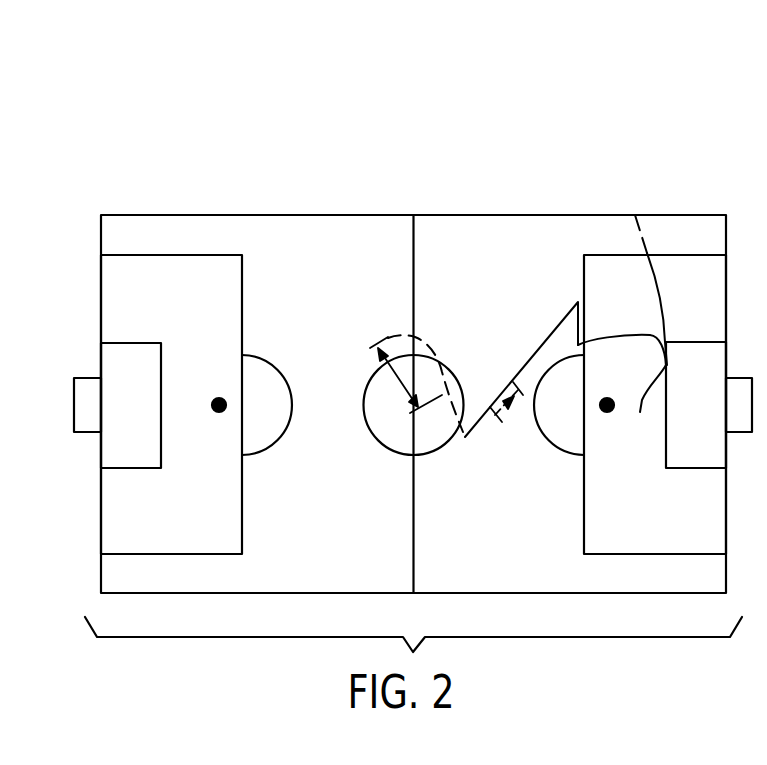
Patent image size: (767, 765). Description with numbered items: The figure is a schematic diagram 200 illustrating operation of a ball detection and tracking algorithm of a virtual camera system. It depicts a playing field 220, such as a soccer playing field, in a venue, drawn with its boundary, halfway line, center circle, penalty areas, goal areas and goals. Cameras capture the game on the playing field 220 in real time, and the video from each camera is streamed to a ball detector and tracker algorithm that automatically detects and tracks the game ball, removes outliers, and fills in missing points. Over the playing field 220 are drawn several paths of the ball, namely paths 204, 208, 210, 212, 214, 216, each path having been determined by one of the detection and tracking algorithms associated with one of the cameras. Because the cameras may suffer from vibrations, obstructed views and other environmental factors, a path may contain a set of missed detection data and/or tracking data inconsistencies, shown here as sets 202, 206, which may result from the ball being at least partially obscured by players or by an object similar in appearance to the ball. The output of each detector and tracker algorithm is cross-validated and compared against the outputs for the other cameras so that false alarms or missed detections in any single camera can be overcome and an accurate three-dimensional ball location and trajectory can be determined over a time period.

The schematic diagram 200 is at (560, 70).
The set of missed detection data and/or tracking data inconsistencies 202 is at (392, 381).
The path 204 is at (461, 433).
The set of missed detection data and/or tracking data inconsistencies 206 is at (508, 412).
The path 208 is at (528, 361).
The path 210 is at (577, 334).
The path 212 is at (605, 340).
The path 214 is at (640, 412).
The path 216 is at (667, 322).
The playing field 220 is at (335, 215).